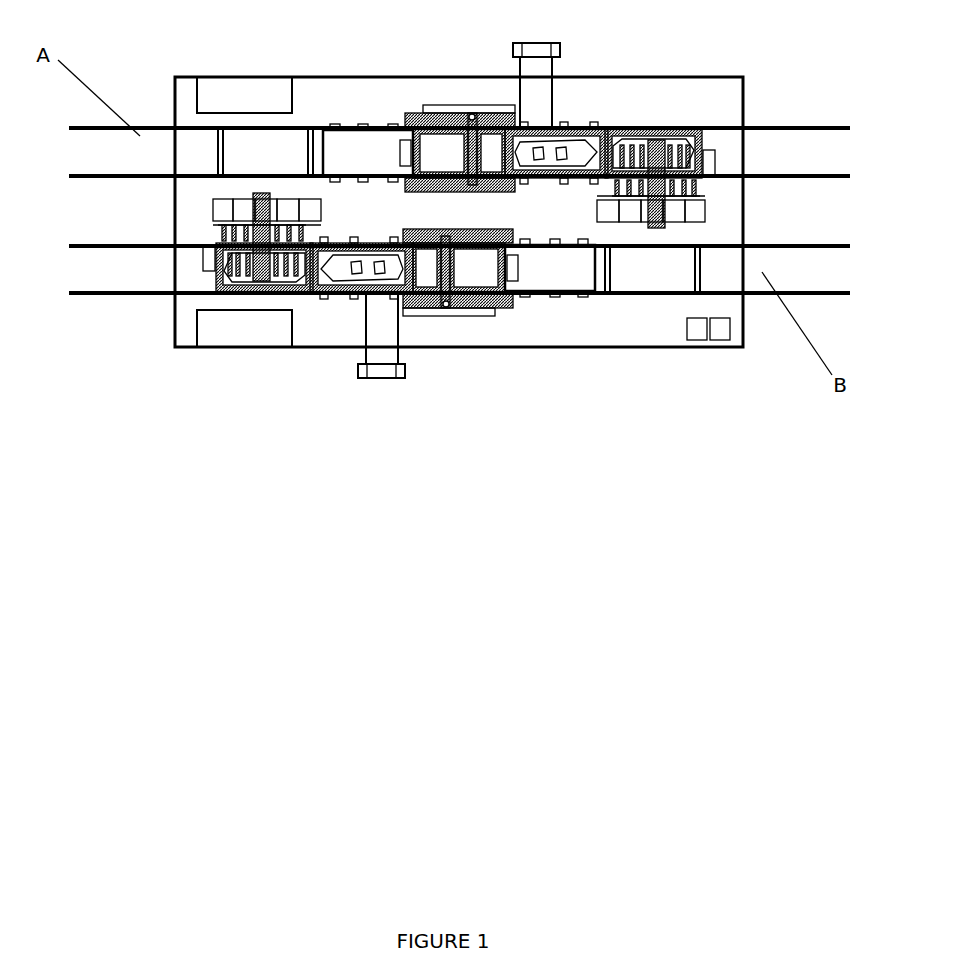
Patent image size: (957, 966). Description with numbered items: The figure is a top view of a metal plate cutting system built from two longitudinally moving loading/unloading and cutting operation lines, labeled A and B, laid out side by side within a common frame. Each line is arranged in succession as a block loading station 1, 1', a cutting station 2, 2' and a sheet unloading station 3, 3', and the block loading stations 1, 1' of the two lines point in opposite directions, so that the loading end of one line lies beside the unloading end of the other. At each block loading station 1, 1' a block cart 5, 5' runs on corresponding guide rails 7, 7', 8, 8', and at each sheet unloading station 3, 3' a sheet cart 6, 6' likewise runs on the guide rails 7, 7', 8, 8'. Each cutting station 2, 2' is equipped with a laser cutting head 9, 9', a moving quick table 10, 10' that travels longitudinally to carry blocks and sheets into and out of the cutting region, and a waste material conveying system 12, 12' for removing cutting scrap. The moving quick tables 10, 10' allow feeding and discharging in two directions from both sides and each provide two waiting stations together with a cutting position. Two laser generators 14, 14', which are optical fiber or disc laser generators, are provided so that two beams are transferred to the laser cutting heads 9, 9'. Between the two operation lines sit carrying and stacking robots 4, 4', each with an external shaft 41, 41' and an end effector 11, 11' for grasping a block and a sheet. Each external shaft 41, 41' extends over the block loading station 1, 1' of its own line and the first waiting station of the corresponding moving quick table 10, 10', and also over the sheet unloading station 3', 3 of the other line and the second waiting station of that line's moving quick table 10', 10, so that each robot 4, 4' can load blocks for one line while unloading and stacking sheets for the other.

The block loading station 1 is at (459, 181).
The block loading station 1' is at (699, 367).
The cutting station 2 is at (460, 104).
The cutting station 2' is at (458, 328).
The sheet unloading station 3 is at (660, 97).
The sheet unloading station 3' is at (258, 335).
The carrying and stacking robot 4 is at (744, 184).
The carrying and stacking robot 4' is at (175, 237).
The block cart 5 is at (265, 106).
The block cart 5' is at (652, 319).
The sheet cart 6 is at (580, 110).
The sheet cart 6' is at (349, 315).
The guide rail 7 is at (459, 106).
The guide rail 7' is at (459, 320).
The guide rail 8 is at (459, 83).
The guide rail 8' is at (459, 343).
The laser cutting head 9 is at (459, 110).
The laser cutting head 9' is at (459, 315).
The moving quick table 10 is at (368, 109).
The moving quick table 10' is at (550, 316).
The end effector 11 is at (747, 153).
The end effector 11' is at (175, 267).
The waste material conveying system 12 is at (552, 82).
The waste material conveying system 12' is at (369, 343).
The laser generator 14 is at (238, 74).
The laser generator 14' is at (236, 352).
The external shaft 41 is at (700, 215).
The external shaft 41' is at (215, 216).